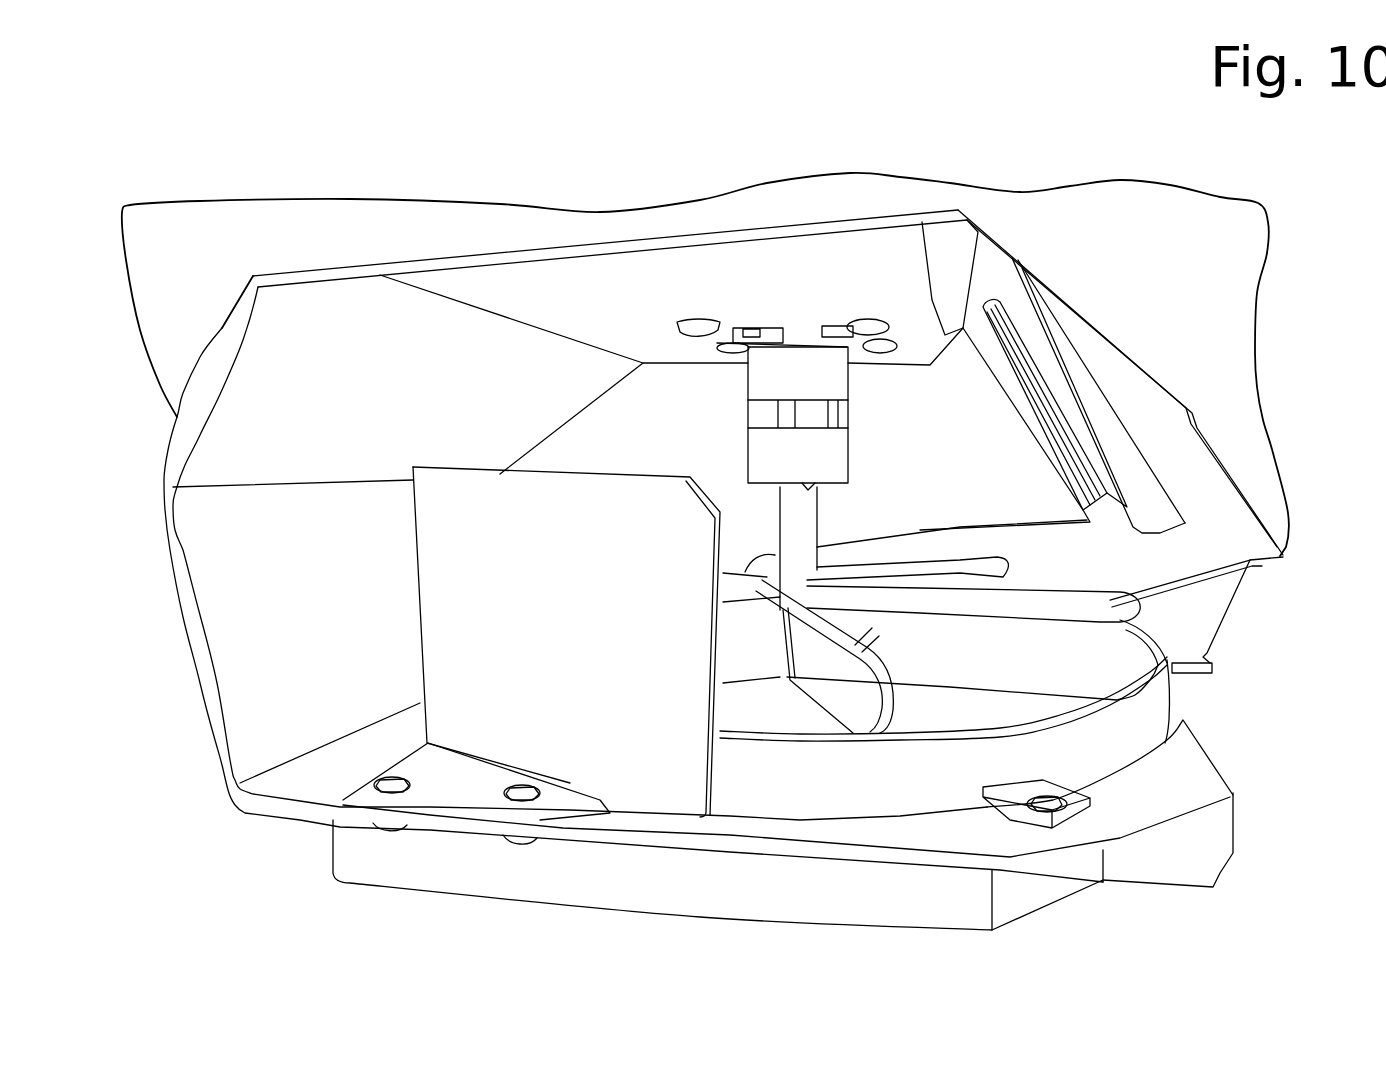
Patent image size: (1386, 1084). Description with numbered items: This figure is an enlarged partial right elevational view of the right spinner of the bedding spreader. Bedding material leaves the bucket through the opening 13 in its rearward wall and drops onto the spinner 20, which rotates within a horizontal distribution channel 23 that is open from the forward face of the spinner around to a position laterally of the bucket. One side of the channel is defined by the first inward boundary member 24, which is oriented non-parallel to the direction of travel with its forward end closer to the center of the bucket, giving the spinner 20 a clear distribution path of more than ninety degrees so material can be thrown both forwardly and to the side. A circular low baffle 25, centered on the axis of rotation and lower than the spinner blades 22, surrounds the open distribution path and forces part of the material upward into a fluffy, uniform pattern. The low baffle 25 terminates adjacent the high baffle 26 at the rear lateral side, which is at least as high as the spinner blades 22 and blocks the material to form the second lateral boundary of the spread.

The opening 13 is at (998, 323).
The spinner 20 is at (1206, 688).
The spinner blades 22 is at (1078, 647).
The horizontal distribution channel 23 is at (196, 656).
The first inward boundary member 24 is at (1127, 560).
The low baffle 25 is at (847, 783).
The high baffle 26 is at (628, 750).